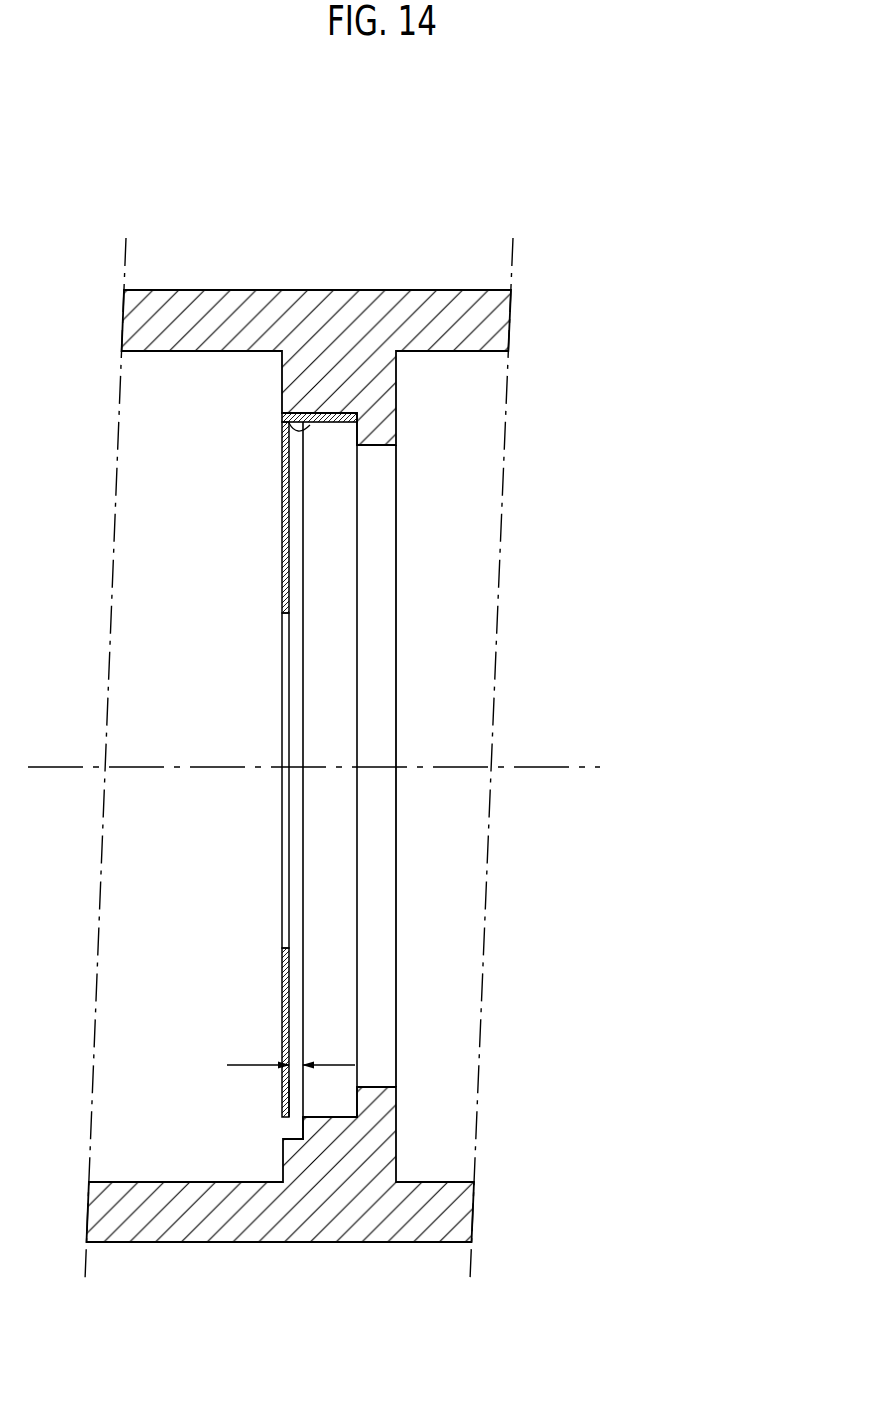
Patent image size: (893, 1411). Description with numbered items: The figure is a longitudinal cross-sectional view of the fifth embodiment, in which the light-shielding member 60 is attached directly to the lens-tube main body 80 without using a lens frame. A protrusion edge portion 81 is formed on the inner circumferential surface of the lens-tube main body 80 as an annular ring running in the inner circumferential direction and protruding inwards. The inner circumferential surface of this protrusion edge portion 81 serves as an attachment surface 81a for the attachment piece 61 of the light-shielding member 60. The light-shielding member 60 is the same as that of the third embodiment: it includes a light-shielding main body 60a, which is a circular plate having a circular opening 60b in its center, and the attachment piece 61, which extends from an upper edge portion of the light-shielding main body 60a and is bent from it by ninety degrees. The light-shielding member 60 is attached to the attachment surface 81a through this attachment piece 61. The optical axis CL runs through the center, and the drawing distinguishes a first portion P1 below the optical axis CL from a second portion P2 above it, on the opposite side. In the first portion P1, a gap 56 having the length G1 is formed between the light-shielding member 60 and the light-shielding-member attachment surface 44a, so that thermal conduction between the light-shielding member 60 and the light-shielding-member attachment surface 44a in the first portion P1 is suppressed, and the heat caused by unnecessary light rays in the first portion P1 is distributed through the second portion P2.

The lens-tube main body 80 is at (318, 290).
The protrusion edge portion 81 is at (380, 1117).
The attachment surface 81a is at (283, 430).
The light-shielding member 60 is at (249, 769).
The light-shielding main body 60a is at (281, 600).
The circular opening 60b is at (281, 622).
The attachment piece 61 is at (330, 425).
The gap 56 is at (295, 1082).
The light-shielding-member attachment surface 44a is at (295, 1112).
The first portion P1 is at (268, 1005).
The second portion P2 is at (257, 498).
The length of gap G1 is at (291, 1050).
The optical axis CL is at (52, 770).